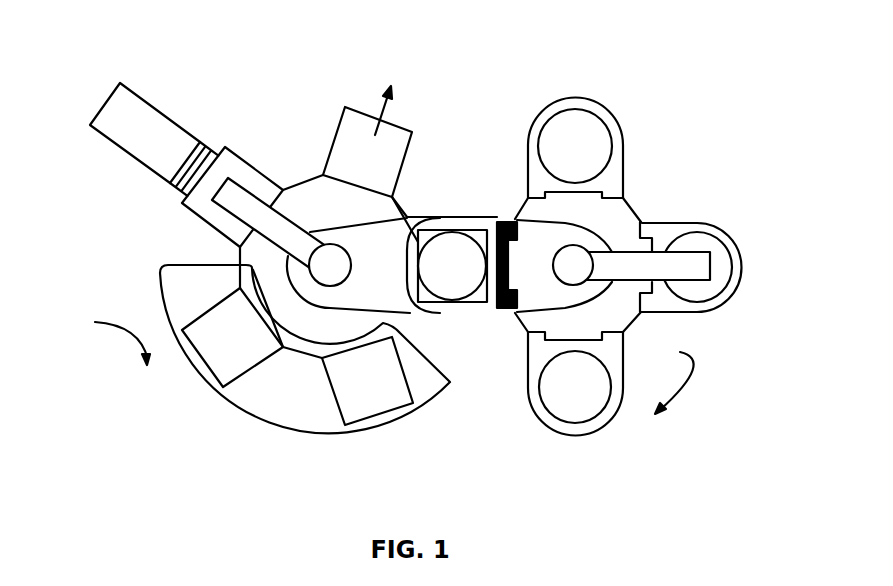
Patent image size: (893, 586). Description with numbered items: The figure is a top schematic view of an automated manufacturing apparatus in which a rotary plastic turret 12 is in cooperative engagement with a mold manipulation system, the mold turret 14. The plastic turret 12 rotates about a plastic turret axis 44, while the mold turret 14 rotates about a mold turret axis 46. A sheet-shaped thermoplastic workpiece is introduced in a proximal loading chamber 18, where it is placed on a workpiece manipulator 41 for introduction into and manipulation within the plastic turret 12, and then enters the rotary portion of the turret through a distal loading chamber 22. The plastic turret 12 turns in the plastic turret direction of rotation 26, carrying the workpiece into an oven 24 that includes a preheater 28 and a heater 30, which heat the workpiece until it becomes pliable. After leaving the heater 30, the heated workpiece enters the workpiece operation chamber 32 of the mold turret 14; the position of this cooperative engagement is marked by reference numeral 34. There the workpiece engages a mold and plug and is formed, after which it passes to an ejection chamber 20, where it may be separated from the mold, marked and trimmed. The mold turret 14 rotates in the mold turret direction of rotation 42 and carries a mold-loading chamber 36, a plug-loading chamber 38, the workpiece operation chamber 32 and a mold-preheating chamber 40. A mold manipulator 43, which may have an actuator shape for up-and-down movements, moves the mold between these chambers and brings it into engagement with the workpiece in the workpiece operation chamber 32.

The plastic turret 12 is at (280, 45).
The mold turret 14 is at (615, 45).
The proximal loading chamber 18 is at (130, 90).
The ejection chamber 20 is at (362, 112).
The distal loading chamber 22 is at (258, 170).
The oven 24 is at (193, 264).
The plastic turret direction of rotation 26 is at (102, 338).
The preheater 28 is at (212, 383).
The heater 30 is at (342, 433).
The workpiece operation chamber 32 is at (432, 220).
The position of cooperative engagement 34 is at (492, 218).
The mold-loading chamber 36 is at (573, 105).
The plug-loading chamber 38 is at (708, 224).
The mold-preheating chamber 40 is at (540, 408).
The workpiece manipulator 41 is at (290, 216).
The mold turret direction of rotation 42 is at (668, 379).
The mold manipulator 43 is at (625, 248).
The plastic turret axis 44 is at (348, 250).
The mold turret axis 46 is at (557, 277).